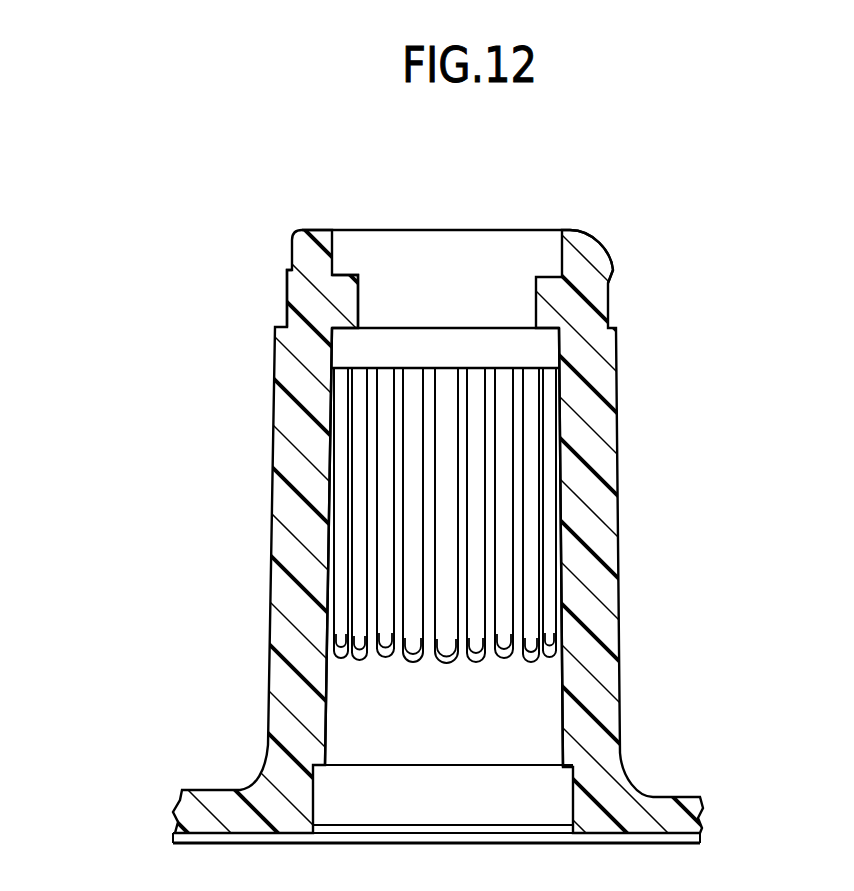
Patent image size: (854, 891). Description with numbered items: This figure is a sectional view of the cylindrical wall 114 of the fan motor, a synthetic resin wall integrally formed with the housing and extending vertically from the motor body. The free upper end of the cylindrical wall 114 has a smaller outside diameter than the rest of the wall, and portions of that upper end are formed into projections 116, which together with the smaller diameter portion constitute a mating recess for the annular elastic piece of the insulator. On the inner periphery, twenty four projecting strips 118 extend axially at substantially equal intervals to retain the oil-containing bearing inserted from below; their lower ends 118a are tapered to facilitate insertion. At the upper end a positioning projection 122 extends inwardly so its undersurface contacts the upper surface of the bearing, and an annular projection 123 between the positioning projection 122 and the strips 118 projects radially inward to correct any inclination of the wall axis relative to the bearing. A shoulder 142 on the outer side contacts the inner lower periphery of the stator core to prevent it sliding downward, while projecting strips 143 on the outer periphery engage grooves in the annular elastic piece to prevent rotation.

The cylindrical wall 114 is at (613, 563).
The projections 116 is at (613, 272).
The projecting strips 118 is at (528, 378).
The pin tips 118a is at (497, 658).
The positioning projection 122 is at (354, 299).
The annular projection 123 is at (565, 350).
The shoulder 142 is at (276, 522).
The projecting strips for preventing rotation 143 is at (285, 303).